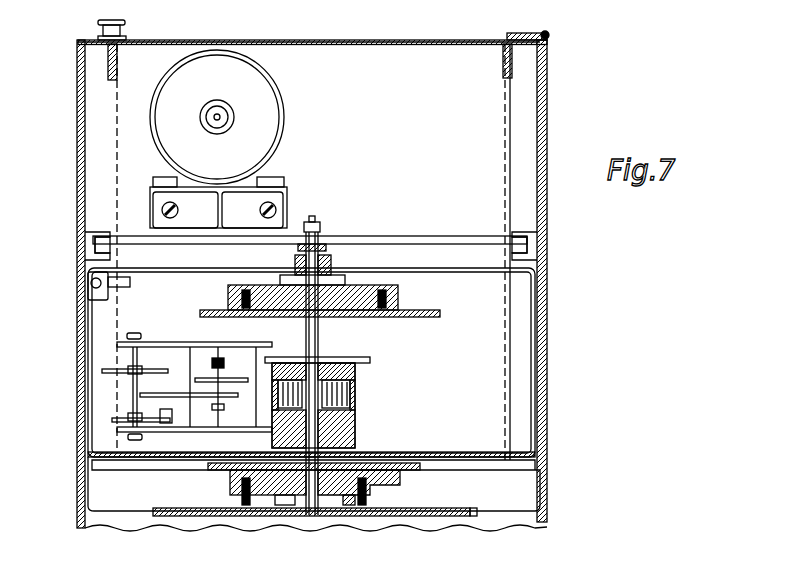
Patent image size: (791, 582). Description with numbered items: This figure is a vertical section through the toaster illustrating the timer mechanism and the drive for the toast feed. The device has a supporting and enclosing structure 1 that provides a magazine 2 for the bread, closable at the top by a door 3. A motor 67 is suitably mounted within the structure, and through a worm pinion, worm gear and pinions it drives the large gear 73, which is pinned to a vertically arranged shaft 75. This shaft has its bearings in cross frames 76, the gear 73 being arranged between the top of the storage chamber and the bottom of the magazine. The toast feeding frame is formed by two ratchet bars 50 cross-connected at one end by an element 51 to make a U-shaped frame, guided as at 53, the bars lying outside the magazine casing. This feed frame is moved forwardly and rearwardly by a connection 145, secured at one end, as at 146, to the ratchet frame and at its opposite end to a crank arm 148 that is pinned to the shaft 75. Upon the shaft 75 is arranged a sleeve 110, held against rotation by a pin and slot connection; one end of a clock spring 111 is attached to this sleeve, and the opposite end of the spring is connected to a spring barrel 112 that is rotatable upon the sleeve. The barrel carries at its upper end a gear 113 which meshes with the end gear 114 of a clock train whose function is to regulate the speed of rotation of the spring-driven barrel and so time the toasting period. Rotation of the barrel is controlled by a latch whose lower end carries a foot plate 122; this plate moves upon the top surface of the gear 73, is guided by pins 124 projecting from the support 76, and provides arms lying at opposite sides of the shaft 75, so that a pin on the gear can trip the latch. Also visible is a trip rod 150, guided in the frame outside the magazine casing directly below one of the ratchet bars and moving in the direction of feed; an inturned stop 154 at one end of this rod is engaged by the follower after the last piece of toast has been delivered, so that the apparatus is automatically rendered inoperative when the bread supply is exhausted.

The supporting and enclosing structure 1 is at (547, 118).
The magazine 2 is at (510, 145).
The door 3 is at (330, 40).
The motor 67 is at (265, 99).
The cross-connecting element 51 is at (426, 234).
The guide 53 is at (92, 231).
The ratchet bar 50 is at (94, 245).
The trip rod 150 is at (96, 283).
The stop 154 is at (130, 282).
The cross frame 76 is at (451, 312).
The shaft 75 is at (315, 518).
The connection securing point 146 is at (313, 220).
The connection 145 is at (298, 248).
The crank arm 148 is at (332, 259).
The gear 113 is at (372, 360).
The sleeve 110 is at (355, 432).
The clock spring 111 is at (355, 395).
The spring barrel 112 is at (355, 421).
The end gear of clock train 114 is at (226, 375).
The guide pin 124 is at (270, 510).
The foot plate 122 is at (290, 506).
The gear 73 is at (447, 517).